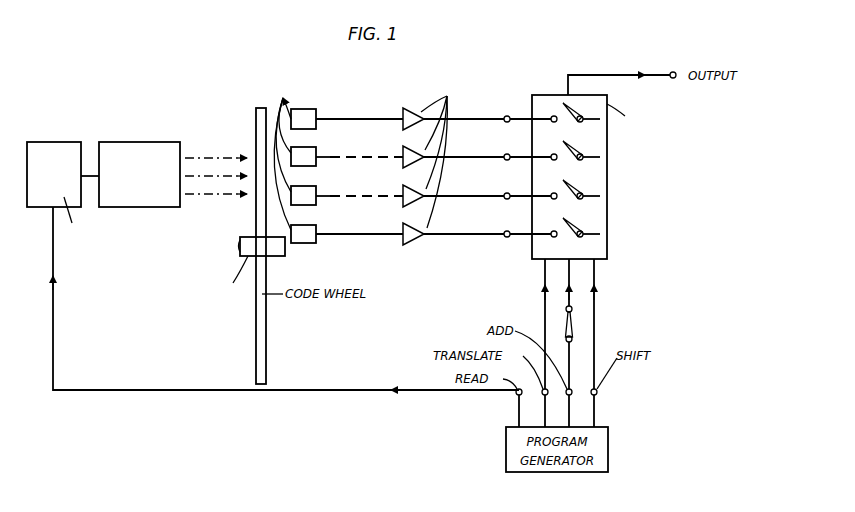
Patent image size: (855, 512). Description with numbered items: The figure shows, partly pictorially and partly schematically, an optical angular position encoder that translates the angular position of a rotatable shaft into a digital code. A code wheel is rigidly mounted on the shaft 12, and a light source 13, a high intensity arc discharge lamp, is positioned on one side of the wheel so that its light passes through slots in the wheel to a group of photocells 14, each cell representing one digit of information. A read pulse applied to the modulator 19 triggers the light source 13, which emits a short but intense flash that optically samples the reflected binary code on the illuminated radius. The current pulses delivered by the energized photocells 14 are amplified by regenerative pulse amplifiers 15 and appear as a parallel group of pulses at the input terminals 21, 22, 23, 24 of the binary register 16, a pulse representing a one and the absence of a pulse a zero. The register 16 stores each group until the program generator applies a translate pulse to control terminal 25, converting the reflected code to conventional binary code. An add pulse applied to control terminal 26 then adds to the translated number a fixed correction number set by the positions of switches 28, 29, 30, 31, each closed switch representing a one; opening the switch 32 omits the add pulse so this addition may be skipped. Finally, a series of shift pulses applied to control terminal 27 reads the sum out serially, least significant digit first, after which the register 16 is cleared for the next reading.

The modulator 19 is at (41, 142).
The light source 13 is at (126, 142).
The shaft 12 is at (245, 237).
The photocells 14 is at (316, 127).
The regenerative pulse amplifiers 15 is at (417, 95).
The input terminal 24 is at (505, 122).
The input terminal 23 is at (505, 160).
The input terminal 22 is at (505, 199).
The input terminal 21 is at (505, 237).
The switch 28 is at (559, 114).
The switch 29 is at (559, 152).
The switch 30 is at (559, 191).
The switch 31 is at (559, 229).
The binary register 16 is at (607, 213).
The switch 32 is at (576, 322).
The control terminal 25 is at (541, 395).
The control terminal 26 is at (573, 394).
The control terminal 27 is at (598, 391).